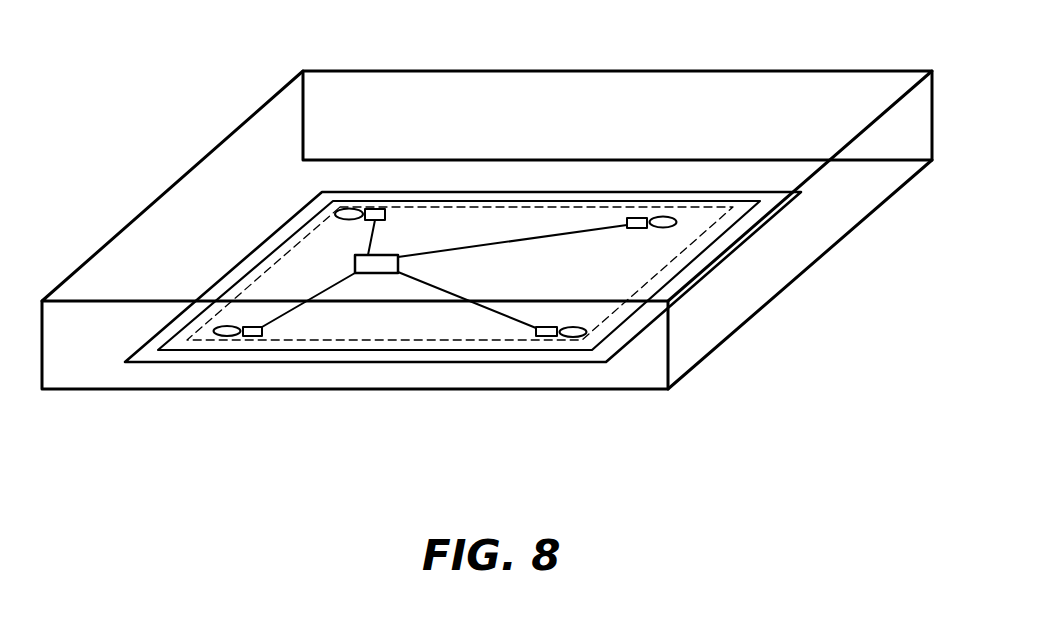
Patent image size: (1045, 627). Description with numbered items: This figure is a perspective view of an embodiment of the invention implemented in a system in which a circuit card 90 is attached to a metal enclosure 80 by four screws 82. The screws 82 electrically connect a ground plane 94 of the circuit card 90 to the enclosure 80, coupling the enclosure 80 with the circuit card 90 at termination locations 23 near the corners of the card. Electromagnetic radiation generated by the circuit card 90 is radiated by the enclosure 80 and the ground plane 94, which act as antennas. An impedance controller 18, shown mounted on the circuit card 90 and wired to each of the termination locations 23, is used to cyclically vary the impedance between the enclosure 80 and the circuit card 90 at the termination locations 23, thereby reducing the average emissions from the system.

The metal enclosure 80 is at (242, 125).
The screws 82 is at (353, 208).
The termination locations 23 is at (378, 209).
The impedance controller 18 is at (392, 255).
The circuit card 90 is at (443, 191).
The ground plane 94 is at (675, 201).